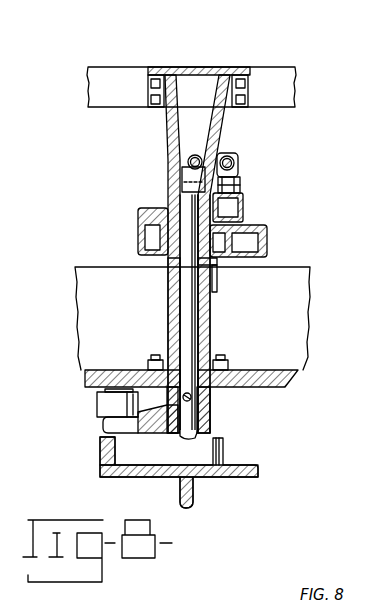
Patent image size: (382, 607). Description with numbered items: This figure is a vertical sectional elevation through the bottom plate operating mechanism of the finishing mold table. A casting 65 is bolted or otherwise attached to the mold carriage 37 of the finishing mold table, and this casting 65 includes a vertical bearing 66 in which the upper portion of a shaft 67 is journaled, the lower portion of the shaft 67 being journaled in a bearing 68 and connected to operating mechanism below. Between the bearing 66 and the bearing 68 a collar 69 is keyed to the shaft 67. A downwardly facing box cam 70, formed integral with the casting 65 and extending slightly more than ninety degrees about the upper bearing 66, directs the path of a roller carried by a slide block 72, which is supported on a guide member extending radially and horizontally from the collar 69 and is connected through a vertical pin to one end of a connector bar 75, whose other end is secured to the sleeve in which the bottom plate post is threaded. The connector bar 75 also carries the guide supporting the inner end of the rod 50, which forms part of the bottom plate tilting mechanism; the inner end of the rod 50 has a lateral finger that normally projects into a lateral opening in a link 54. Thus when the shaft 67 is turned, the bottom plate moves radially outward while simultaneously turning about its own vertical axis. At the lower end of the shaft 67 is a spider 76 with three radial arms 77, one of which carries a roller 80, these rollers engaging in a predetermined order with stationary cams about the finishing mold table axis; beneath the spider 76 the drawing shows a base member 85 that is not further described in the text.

The mold carriage 37 is at (283, 71).
The casting 65 is at (166, 137).
The link 54 is at (195, 155).
The rod 50 is at (232, 158).
The connector bar 75 is at (246, 206).
The box cam 70 is at (268, 236).
The vertical bearing 66 is at (170, 258).
The collar 69 is at (168, 293).
The shaft 67 is at (187, 323).
The slide block 72 is at (219, 277).
The bearing 68 is at (207, 352).
The roller 80 is at (105, 405).
The radial arms 77 is at (115, 422).
The spider 76 is at (219, 413).
The base 85 is at (102, 452).